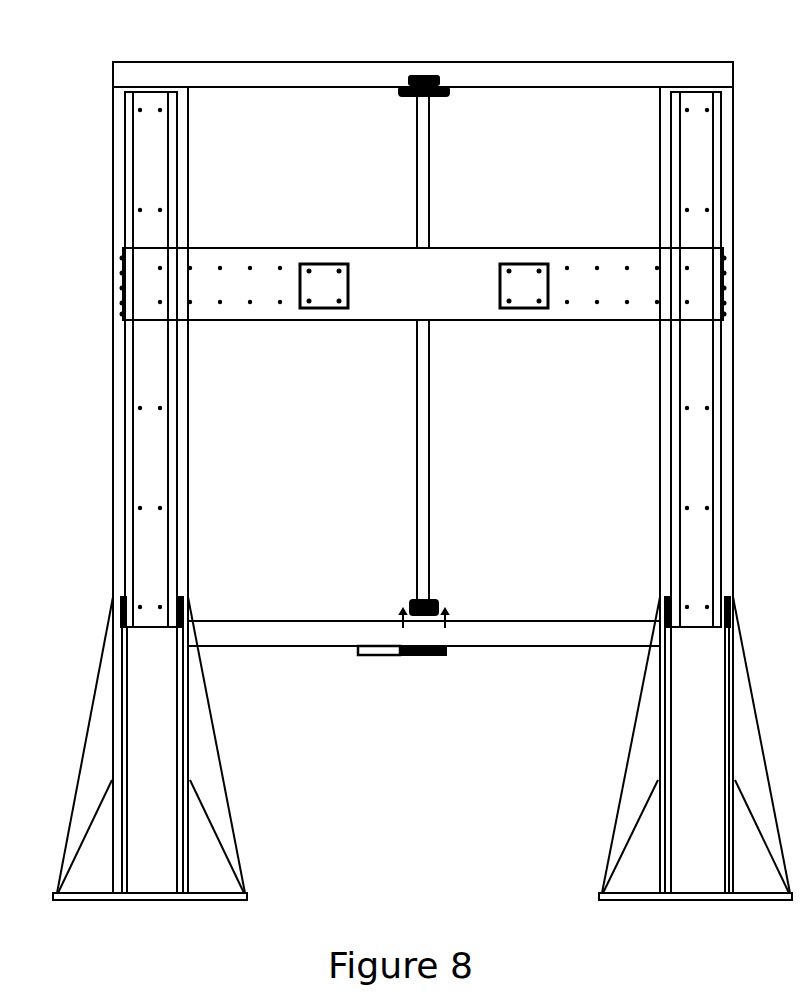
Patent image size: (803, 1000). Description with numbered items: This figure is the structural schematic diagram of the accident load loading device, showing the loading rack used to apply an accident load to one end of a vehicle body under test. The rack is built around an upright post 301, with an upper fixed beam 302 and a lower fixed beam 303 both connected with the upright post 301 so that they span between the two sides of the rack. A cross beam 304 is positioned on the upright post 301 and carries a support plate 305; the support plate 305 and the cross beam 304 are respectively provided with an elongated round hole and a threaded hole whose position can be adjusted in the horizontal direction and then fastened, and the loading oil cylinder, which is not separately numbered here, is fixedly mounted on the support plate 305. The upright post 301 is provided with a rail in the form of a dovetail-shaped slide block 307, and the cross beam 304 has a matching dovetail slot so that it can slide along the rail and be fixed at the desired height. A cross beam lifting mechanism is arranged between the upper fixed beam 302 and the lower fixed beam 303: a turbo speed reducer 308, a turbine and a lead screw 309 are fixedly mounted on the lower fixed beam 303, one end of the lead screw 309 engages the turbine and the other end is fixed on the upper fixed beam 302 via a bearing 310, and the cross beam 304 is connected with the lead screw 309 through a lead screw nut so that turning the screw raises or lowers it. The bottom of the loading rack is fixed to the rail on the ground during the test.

The upright post 301 is at (402, 653).
The upper fixed beam 302 is at (423, 453).
The lower fixed beam 303 is at (336, 487).
The cross beam 304 is at (370, 261).
The support plate 305 is at (525, 285).
The dovetail-shaped slide block 307 is at (367, 349).
The turbo speed reducer 308 is at (230, 464).
The lead screw 309 is at (230, 327).
The bearing 310 is at (412, 52).